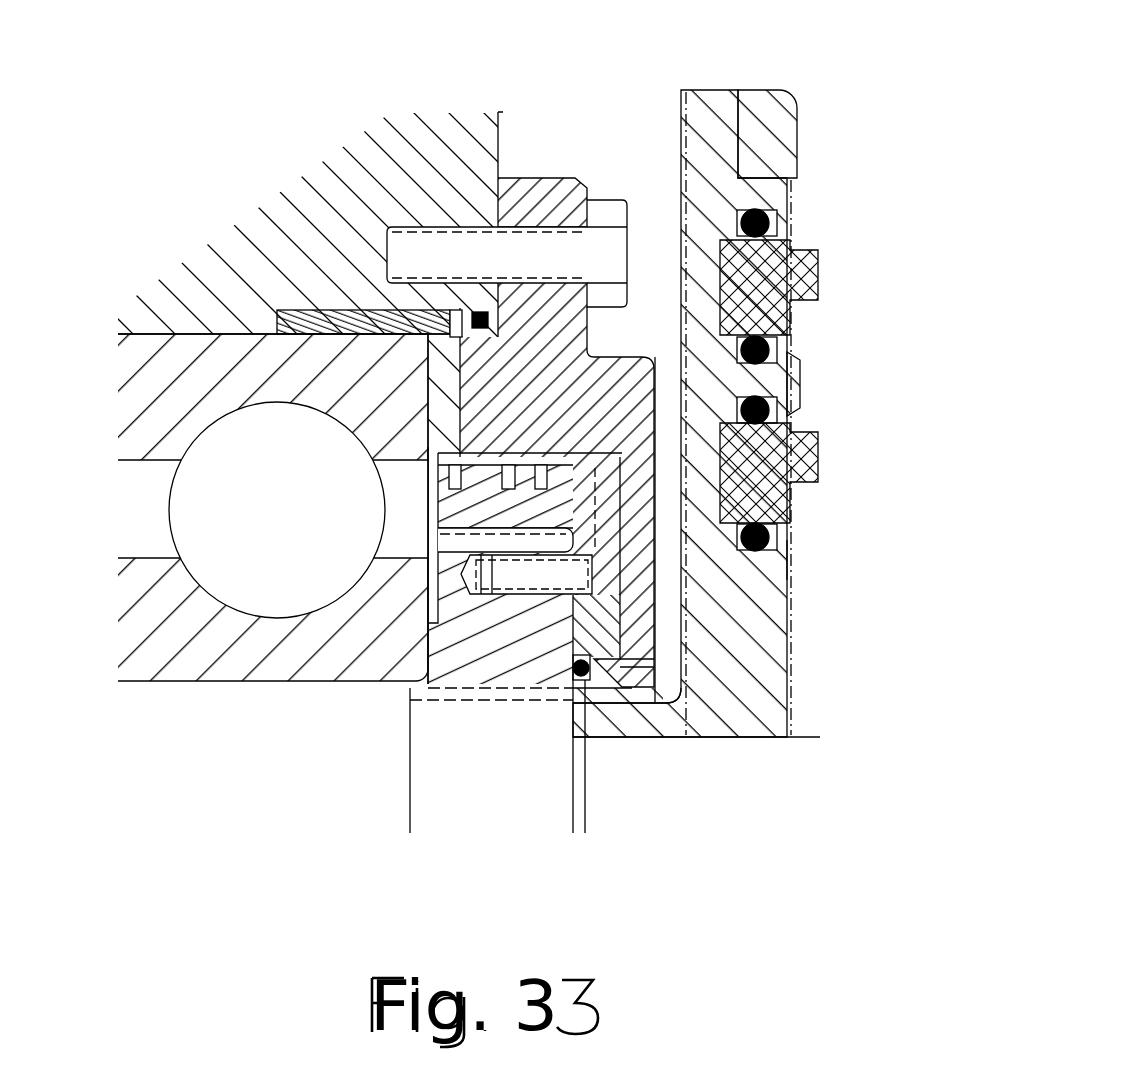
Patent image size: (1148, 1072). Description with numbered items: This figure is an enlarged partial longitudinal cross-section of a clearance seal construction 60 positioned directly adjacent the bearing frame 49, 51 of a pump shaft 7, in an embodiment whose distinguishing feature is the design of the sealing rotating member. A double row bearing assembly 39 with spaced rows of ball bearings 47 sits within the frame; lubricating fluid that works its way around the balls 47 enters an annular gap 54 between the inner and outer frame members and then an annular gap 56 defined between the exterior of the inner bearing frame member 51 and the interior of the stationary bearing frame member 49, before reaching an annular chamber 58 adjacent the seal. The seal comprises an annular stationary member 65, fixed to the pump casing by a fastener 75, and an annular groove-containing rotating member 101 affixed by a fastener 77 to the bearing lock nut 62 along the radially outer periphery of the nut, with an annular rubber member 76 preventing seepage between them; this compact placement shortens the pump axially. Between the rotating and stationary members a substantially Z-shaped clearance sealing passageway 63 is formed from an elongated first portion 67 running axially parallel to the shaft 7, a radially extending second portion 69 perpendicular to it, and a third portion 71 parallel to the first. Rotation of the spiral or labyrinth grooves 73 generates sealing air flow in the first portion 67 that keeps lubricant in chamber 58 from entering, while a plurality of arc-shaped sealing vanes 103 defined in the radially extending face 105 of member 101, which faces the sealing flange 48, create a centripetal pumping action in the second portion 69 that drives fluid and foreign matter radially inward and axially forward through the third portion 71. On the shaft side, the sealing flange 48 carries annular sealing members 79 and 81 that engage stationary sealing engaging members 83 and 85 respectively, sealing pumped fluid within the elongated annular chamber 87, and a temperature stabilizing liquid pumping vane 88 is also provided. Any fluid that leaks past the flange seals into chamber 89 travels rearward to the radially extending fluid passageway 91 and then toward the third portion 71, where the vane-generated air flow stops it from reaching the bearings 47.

The pump shaft 7 is at (224, 786).
The double row bearing assembly 39 is at (255, 291).
The ball bearings 47 is at (268, 529).
The sealing flange 48 is at (694, 108).
The stationary bearing frame member 49 is at (215, 334).
The inner bearing frame member 51 is at (380, 682).
The annular gap 54 is at (144, 546).
The annular gap 56 is at (415, 559).
The annular chamber 58 is at (461, 574).
The clearance seal construction 60 is at (593, 150).
The bearing lock nut 62 is at (482, 678).
The clearance sealing passageway 63 is at (550, 245).
The annular stationary member 65 is at (562, 375).
The first portion of sealing passageway 67 is at (428, 447).
The second portion of sealing passageway 69 is at (742, 733).
The third portion of sealing passageway 71 is at (640, 690).
The spiral or labyrinth grooves 73 is at (455, 490).
The fastener 75 is at (552, 245).
The annular rubber member 76 is at (575, 685).
The fastener 77 is at (483, 678).
The annular sealing member 79 is at (787, 238).
The annular sealing member 81 is at (790, 507).
The stationary annular sealing engaging member 83 is at (797, 250).
The stationary annular sealing engaging member 85 is at (808, 453).
The elongated annular chamber 87 is at (861, 681).
The temperature stabilizing liquid pumping vane 88 is at (790, 383).
The chamber 89 is at (553, 113).
The radially extending fluid passageway 91 is at (672, 688).
The annular groove-containing rotating member 101 is at (440, 532).
The arc-shaped sealing vanes 103 is at (563, 377).
The radially extending face 105 is at (772, 350).